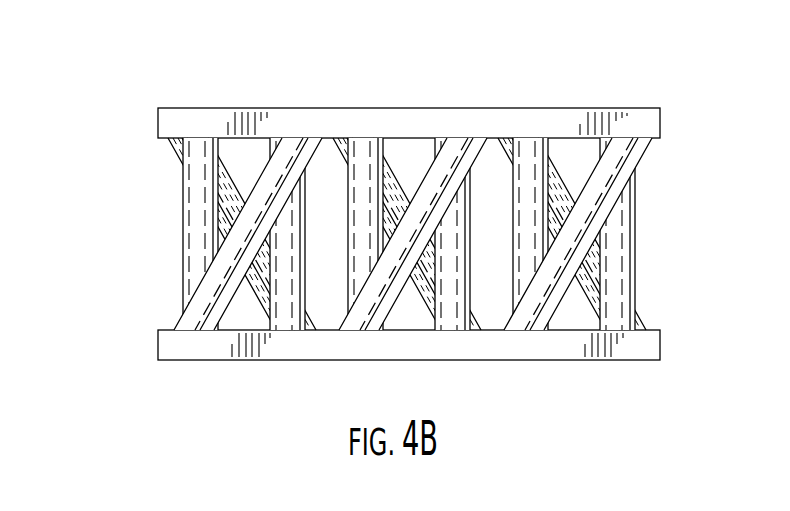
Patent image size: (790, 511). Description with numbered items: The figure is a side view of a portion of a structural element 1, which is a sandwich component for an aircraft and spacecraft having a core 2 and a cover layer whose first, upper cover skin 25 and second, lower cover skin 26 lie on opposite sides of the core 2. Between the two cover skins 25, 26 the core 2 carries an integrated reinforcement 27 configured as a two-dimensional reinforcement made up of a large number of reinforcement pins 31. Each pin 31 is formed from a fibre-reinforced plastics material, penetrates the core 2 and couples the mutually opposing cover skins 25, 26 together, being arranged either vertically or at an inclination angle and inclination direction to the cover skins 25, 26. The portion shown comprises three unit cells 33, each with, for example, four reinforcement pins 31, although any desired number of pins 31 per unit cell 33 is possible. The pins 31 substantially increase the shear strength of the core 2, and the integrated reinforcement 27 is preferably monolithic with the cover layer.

The structural element 1 is at (113, 76).
The core 2 is at (493, 305).
The first cover skin 25 is at (645, 122).
The second cover skin 26 is at (631, 352).
The integrated reinforcement 27 is at (175, 235).
The reinforcement pin 31 is at (295, 142).
The unit cell 33 is at (212, 104).